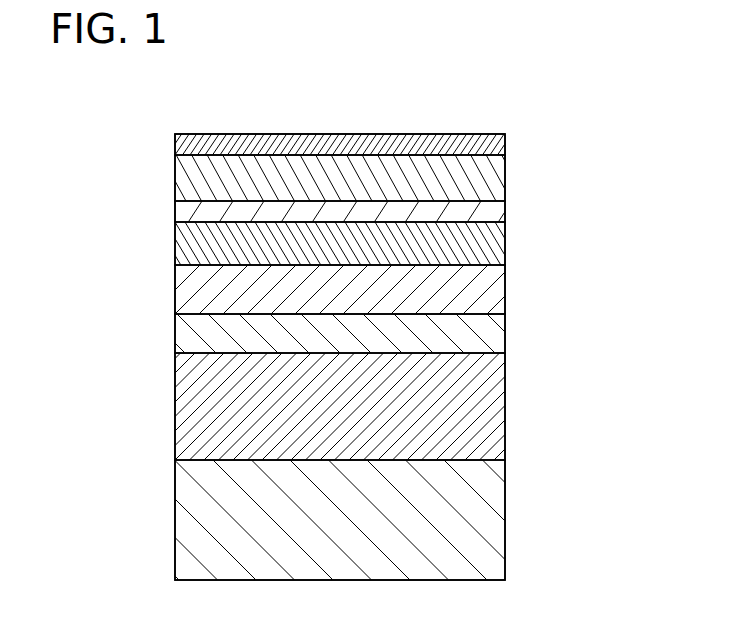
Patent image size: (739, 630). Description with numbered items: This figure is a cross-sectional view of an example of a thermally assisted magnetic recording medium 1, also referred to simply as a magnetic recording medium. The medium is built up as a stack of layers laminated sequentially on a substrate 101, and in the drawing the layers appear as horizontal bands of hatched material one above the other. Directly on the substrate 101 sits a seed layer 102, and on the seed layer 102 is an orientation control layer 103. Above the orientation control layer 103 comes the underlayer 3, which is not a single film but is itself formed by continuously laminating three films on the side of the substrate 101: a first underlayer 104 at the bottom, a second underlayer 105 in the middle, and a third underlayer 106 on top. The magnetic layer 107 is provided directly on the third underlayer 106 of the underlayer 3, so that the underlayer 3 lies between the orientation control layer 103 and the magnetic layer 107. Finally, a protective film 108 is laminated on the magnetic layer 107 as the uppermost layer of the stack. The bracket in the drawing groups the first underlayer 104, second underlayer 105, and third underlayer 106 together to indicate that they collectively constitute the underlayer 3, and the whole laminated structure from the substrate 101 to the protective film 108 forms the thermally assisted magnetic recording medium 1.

The thermally assisted magnetic recording medium 1 is at (566, 102).
The underlayer 3 is at (393, 253).
The substrate 101 is at (503, 518).
The seed layer 102 is at (503, 404).
The orientation control layer 103 is at (503, 331).
The first underlayer 104 is at (368, 289).
The second underlayer 105 is at (503, 236).
The third underlayer 106 is at (503, 219).
The magnetic layer 107 is at (503, 176).
The protective film 108 is at (505, 142).